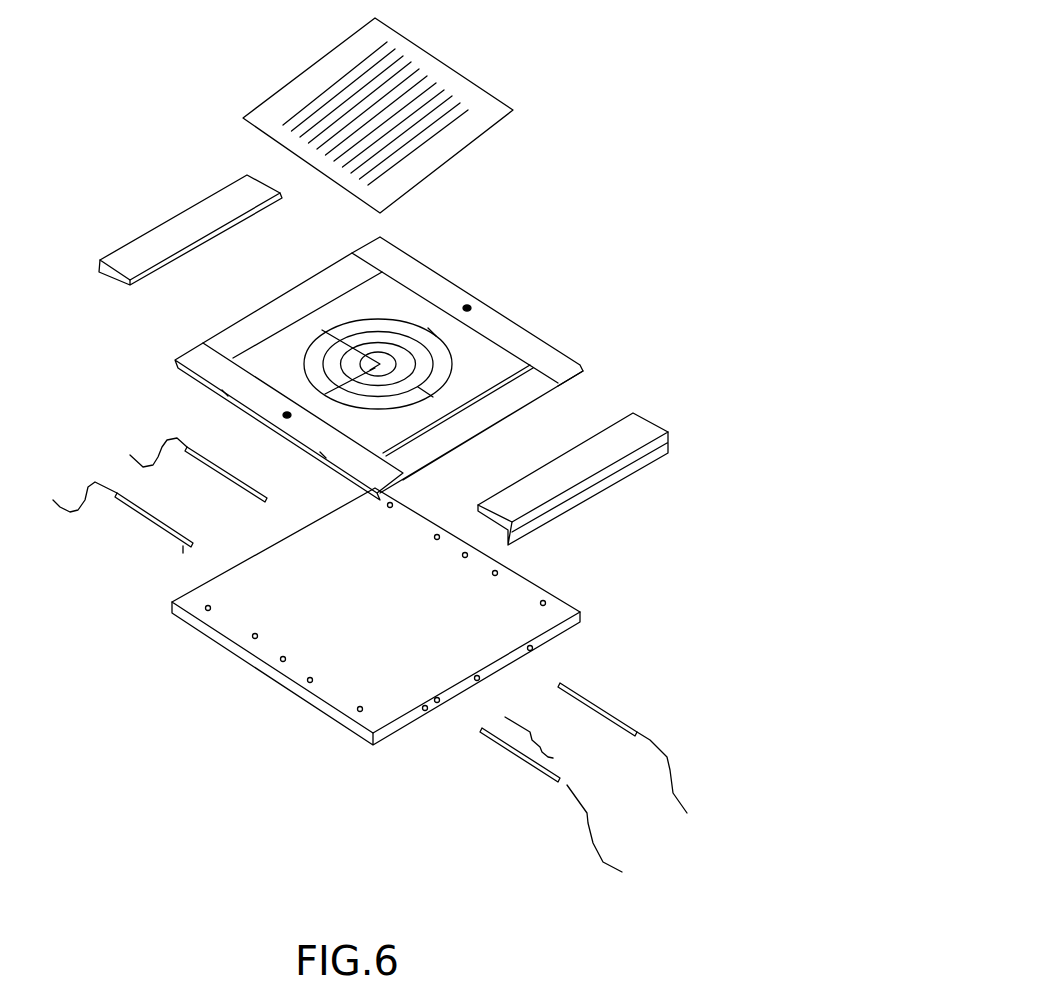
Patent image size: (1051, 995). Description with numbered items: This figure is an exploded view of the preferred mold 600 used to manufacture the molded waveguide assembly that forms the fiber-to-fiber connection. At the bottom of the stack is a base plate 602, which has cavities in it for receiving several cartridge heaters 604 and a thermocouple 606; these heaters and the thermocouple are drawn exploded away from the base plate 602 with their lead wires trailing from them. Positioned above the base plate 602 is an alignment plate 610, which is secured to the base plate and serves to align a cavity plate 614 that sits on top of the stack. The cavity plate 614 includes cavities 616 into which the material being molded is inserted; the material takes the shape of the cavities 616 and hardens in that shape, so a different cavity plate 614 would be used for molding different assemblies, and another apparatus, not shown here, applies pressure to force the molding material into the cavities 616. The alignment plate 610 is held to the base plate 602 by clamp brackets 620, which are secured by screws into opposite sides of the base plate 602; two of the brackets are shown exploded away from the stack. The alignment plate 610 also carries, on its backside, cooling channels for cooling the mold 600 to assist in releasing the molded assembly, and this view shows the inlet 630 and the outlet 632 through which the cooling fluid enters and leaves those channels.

The mold 600 is at (680, 205).
The base plate 602 is at (580, 623).
The cartridge heaters 604 is at (117, 492).
The thermocouple 606 is at (530, 732).
The alignment plate 610 is at (547, 339).
The cavity plate 614 is at (442, 163).
The cavities 616 is at (380, 51).
The clamp brackets 620 is at (173, 215).
The inlet 630 is at (298, 450).
The outlet 632 is at (300, 450).